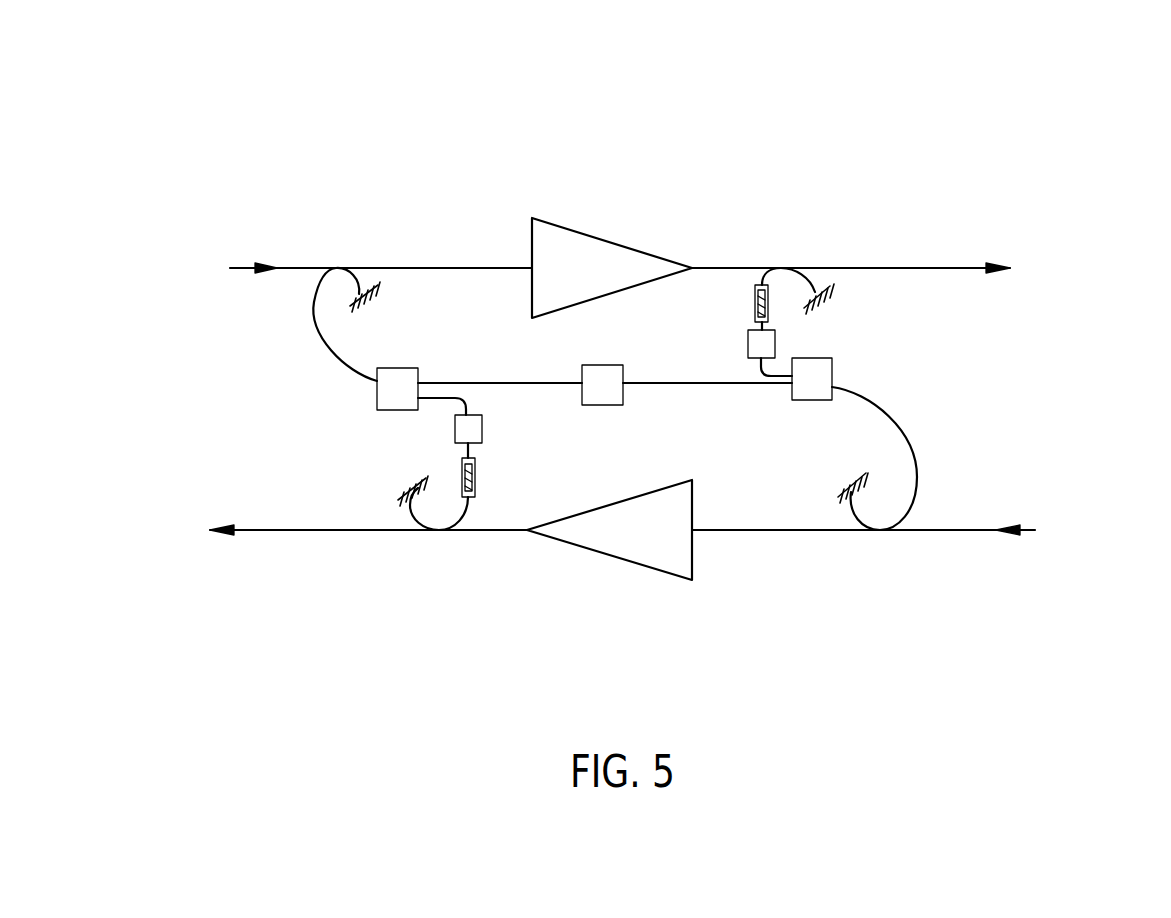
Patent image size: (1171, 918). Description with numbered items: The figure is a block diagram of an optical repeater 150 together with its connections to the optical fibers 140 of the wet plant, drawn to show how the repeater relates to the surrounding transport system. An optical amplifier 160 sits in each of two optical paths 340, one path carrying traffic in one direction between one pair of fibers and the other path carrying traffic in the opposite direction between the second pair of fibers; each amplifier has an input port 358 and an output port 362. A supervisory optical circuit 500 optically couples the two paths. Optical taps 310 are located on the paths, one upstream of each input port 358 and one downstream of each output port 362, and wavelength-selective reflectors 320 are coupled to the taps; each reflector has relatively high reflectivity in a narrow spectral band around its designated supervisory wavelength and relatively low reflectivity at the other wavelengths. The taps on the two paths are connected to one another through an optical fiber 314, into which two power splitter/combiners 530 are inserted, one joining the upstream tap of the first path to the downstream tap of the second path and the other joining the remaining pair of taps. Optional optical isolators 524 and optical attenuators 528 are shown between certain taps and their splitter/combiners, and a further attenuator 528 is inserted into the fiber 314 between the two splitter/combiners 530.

The optical repeater 150 is at (190, 94).
The optical fibers 140 is at (649, 404).
The optical taps 310 is at (867, 620).
The wavelength-selective reflectors 320 is at (375, 290).
The optical paths 340 is at (1005, 600).
The input port 358 is at (718, 609).
The output port 362 is at (500, 604).
The optical amplifier 160 is at (607, 607).
The supervisory optical circuit 500 is at (285, 395).
The optical isolators 524 is at (475, 482).
The optical attenuators 528 is at (858, 349).
The power splitter/combiner 530 is at (913, 397).
The optical fiber 314 is at (687, 390).